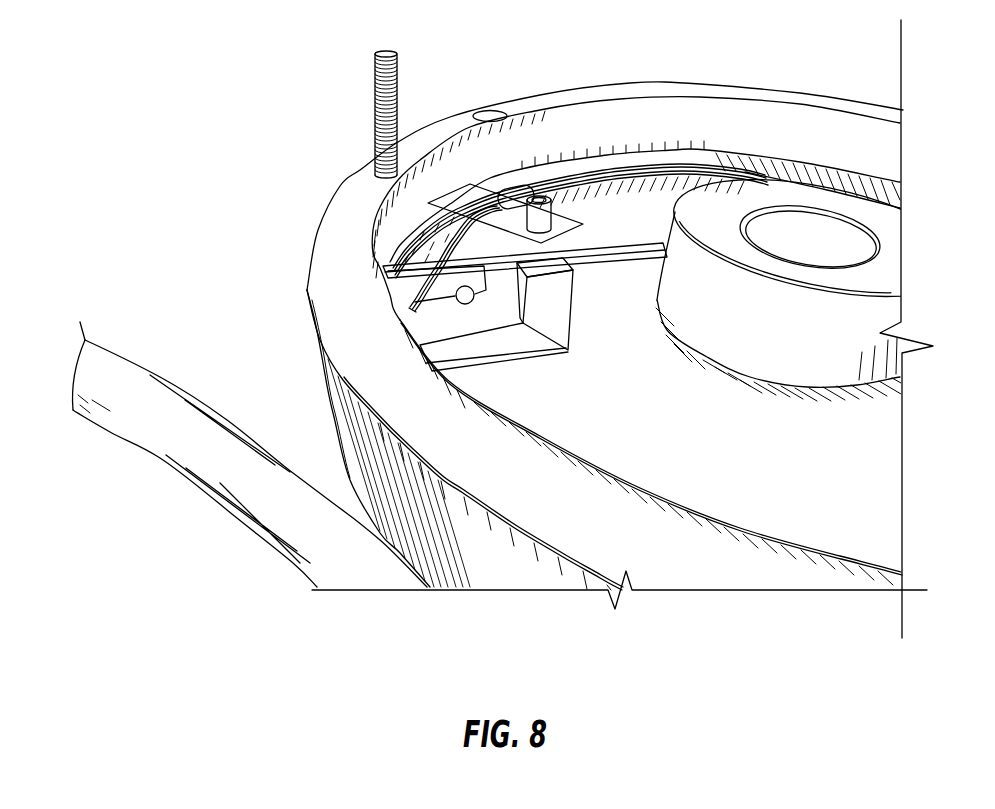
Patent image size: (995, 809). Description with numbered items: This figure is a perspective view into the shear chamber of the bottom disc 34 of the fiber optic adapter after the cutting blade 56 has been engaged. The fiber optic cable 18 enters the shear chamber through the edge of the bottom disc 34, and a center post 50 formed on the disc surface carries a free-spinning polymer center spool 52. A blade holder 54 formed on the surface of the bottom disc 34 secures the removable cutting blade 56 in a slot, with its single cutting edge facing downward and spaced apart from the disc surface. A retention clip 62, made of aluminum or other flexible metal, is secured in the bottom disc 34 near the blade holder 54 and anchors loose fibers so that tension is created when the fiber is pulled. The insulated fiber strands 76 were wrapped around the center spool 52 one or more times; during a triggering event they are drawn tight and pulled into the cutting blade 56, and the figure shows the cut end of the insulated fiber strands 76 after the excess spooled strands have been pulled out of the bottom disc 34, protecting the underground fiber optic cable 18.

The fiber optic cable 18 is at (225, 448).
The bottom disc 34 is at (684, 90).
The center post 50 is at (810, 230).
The center spool 52 is at (784, 333).
The blade holder 54 is at (565, 297).
The cutting blade 56 is at (402, 263).
The retention clip 62 is at (498, 207).
The insulated fiber strands 76 is at (702, 168).